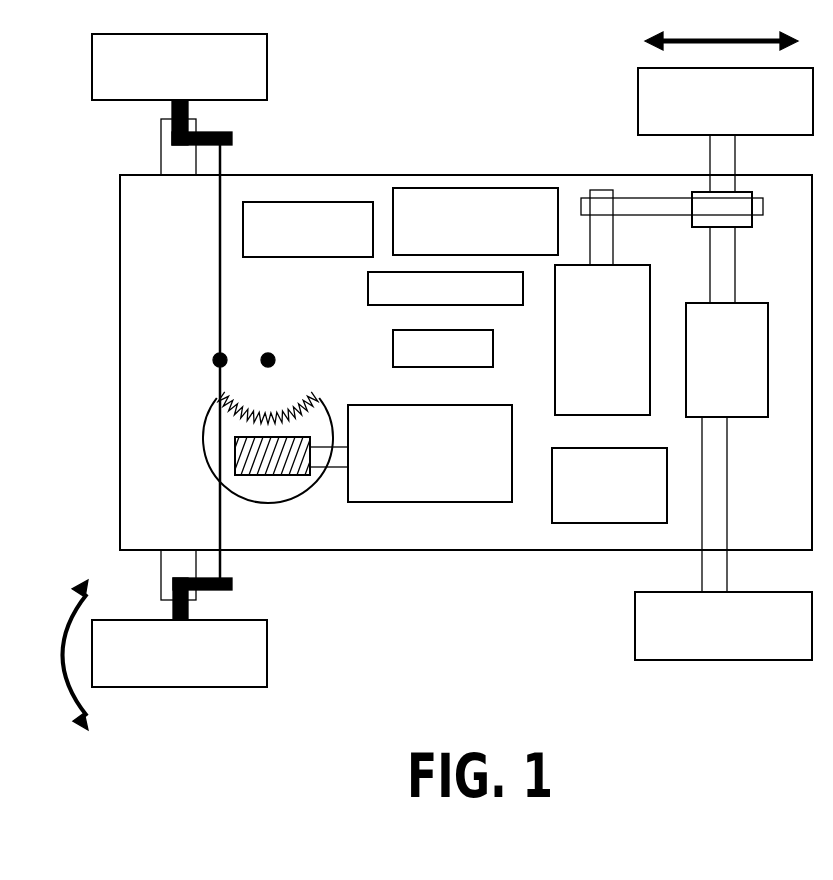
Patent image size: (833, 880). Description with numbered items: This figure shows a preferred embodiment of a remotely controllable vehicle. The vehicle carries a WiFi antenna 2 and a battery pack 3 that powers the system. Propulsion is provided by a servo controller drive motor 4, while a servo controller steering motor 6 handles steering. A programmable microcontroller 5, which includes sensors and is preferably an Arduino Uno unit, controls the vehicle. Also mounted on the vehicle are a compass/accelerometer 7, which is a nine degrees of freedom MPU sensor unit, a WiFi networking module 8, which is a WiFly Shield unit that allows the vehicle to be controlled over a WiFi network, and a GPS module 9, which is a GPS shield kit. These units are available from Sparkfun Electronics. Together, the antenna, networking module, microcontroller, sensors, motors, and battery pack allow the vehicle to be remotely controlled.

The WiFi antenna 2 is at (290, 185).
The battery pack 3 is at (582, 523).
The servo controller drive motor 4 is at (602, 340).
The programmable microcontroller 5 is at (475, 188).
The servo controller steering motor 6 is at (430, 453).
The compass/accelerometer 7 is at (345, 202).
The WiFi networking module 8 is at (368, 287).
The GPS module 9 is at (393, 342).